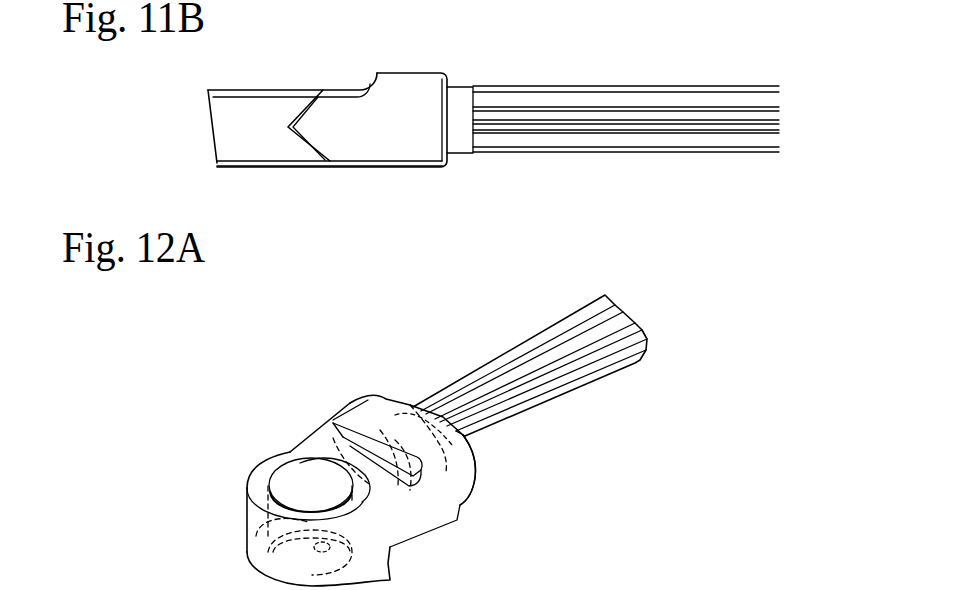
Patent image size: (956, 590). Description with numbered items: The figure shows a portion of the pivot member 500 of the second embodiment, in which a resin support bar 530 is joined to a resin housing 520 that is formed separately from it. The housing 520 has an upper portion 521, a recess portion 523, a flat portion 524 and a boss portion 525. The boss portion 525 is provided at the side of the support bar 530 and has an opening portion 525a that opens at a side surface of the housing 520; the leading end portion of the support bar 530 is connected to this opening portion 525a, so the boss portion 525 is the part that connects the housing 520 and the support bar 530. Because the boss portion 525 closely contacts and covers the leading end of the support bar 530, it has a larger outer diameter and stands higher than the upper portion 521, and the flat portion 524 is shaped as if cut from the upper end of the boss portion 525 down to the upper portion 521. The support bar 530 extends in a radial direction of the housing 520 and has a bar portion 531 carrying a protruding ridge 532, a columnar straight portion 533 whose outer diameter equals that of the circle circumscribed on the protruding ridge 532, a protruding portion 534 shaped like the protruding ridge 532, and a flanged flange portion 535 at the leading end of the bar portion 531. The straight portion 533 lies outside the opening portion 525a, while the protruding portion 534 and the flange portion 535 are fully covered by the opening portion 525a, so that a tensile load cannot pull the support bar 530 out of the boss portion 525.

In FIG. 11B, the pivot member 500 is at (205, 110).
In FIG. 12A, the pivot member 500 is at (243, 510).
In FIG. 11B, the housing 520 is at (228, 136).
In FIG. 12A, the housing 520 is at (251, 540).
In FIG. 11B, the upper portion 521 is at (258, 89).
In FIG. 12A, the upper portion 521 is at (260, 487).
In FIG. 12A, the recess portion 523 is at (297, 477).
In FIG. 11B, the flat portion 524 is at (343, 89).
In FIG. 12A, the flat portion 524 is at (310, 443).
In FIG. 11B, the boss portion 525 is at (400, 89).
In FIG. 12A, the boss portion 525 is at (350, 413).
In FIG. 12A, the opening portion 525a is at (463, 437).
In FIG. 11B, the support bar 530 is at (707, 86).
In FIG. 12A, the support bar 530 is at (575, 310).
In FIG. 11B, the bar portion 531 is at (737, 130).
In FIG. 12A, the bar portion 531 is at (633, 322).
In FIG. 11B, the protruding ridge 532 is at (641, 130).
In FIG. 12A, the protruding ridge 532 is at (612, 350).
In FIG. 11B, the straight portion 533 is at (455, 89).
In FIG. 12A, the straight portion 533 is at (428, 410).
In FIG. 12A, the protruding portion 534 is at (393, 423).
In FIG. 12A, the flange portion 535 is at (470, 500).